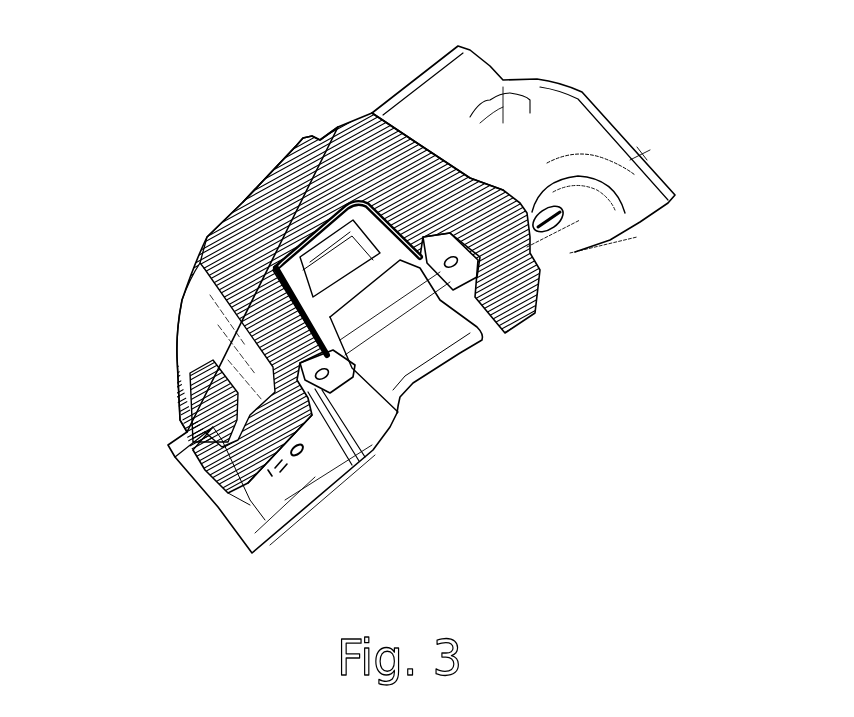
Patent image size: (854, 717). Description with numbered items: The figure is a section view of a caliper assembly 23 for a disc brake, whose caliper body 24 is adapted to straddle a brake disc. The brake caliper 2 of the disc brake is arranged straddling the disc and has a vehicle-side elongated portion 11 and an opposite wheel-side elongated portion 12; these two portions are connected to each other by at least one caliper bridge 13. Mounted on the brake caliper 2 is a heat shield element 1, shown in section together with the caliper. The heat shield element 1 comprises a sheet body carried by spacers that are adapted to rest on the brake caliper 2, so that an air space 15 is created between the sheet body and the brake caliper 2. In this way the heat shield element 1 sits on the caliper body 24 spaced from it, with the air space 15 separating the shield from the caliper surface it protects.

The heat shield element 1 is at (333, 280).
The brake caliper 2 is at (242, 237).
The vehicle-side elongated portion 11 is at (230, 500).
The wheel-side elongated portion 12 is at (563, 152).
The caliper bridge 13 is at (297, 197).
The air space 15 is at (257, 232).
The caliper assembly 23 is at (360, 80).
The caliper body 24 is at (240, 268).